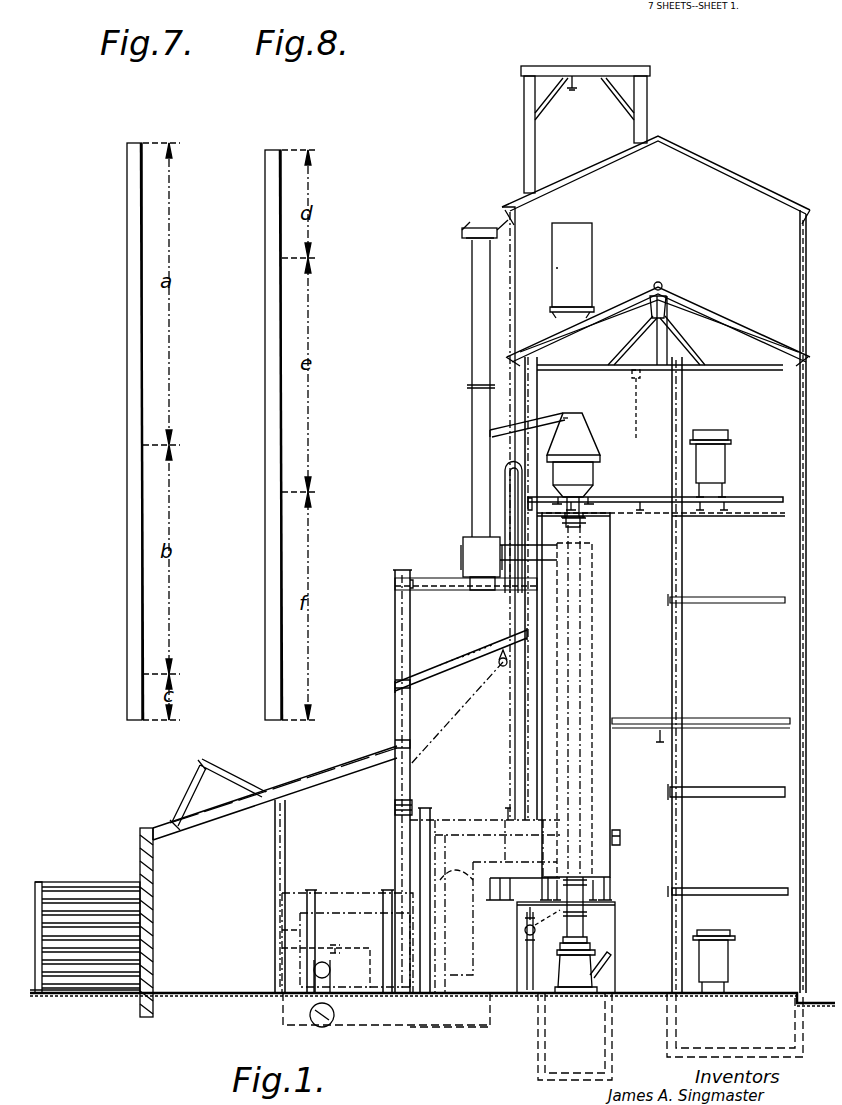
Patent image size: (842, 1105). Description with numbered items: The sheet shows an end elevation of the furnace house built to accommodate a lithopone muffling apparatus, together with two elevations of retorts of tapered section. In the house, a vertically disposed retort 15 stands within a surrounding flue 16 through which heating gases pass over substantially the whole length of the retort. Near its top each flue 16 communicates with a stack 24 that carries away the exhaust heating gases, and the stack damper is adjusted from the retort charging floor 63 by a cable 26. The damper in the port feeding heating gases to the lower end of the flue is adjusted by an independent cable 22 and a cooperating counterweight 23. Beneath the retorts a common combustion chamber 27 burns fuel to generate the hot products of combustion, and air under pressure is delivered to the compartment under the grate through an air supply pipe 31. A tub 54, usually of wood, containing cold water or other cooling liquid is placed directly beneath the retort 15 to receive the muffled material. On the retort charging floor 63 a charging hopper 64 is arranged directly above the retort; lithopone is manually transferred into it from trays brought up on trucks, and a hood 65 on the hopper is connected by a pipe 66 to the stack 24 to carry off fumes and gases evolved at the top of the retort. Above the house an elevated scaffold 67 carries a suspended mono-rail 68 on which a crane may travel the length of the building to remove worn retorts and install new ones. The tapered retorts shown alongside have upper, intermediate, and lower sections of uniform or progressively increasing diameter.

The retort 15 is at (579, 600).
The flue 16 is at (590, 672).
The cable 22 is at (448, 718).
The counterweight 23 is at (395, 818).
The stack 24 is at (470, 318).
The cable 26 is at (577, 440).
The combustion chamber 27 is at (338, 930).
The air supply pipe 31 is at (312, 1016).
The tub 54 is at (644, 916).
The retort charging floor 63 is at (640, 497).
The charging hopper 64 is at (578, 466).
The hood 65 is at (570, 420).
The pipe 66 is at (492, 433).
The scaffold 67 is at (524, 112).
The mono-rail 68 is at (578, 88).